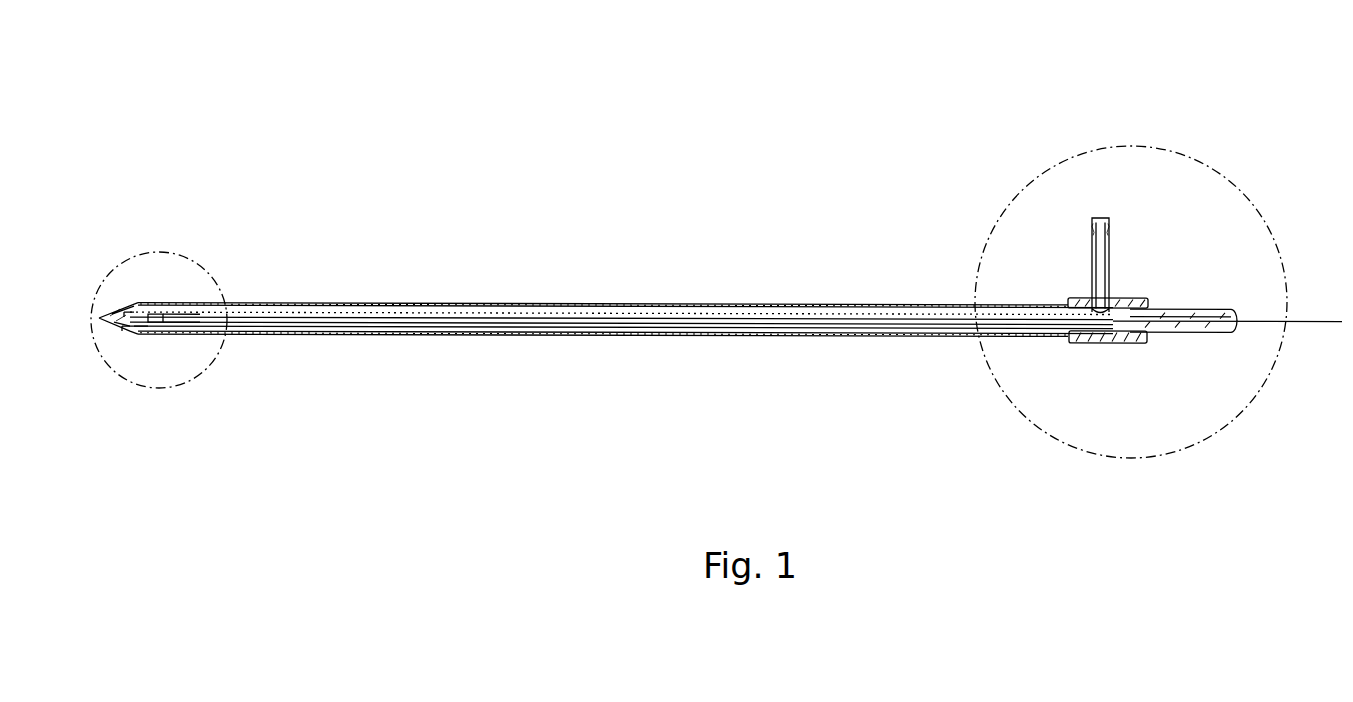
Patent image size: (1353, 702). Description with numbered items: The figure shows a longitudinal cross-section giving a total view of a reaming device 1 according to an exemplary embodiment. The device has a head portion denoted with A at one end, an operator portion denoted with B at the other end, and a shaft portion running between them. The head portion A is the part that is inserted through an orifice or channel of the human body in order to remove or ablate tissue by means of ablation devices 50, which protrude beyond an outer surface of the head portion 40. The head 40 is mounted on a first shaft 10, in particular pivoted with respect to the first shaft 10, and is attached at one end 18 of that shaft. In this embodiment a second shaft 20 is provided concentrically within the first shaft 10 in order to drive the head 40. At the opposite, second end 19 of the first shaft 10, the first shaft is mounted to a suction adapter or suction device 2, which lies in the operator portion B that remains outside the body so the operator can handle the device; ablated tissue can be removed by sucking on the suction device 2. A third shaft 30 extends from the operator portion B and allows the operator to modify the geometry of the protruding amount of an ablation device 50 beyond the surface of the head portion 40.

The reaming device 1 is at (621, 100).
The first shaft 10 is at (718, 305).
The second shaft 20 is at (537, 315).
The ablation devices 50 is at (124, 270).
The head portion 40 is at (117, 330).
The first end of the first shaft 18 is at (165, 337).
The suction adapter 2 is at (1117, 343).
The second end of the first shaft 19 is at (1066, 343).
The third shaft 30 is at (1313, 322).
The head portion A is at (193, 257).
The operator portion B is at (1188, 153).